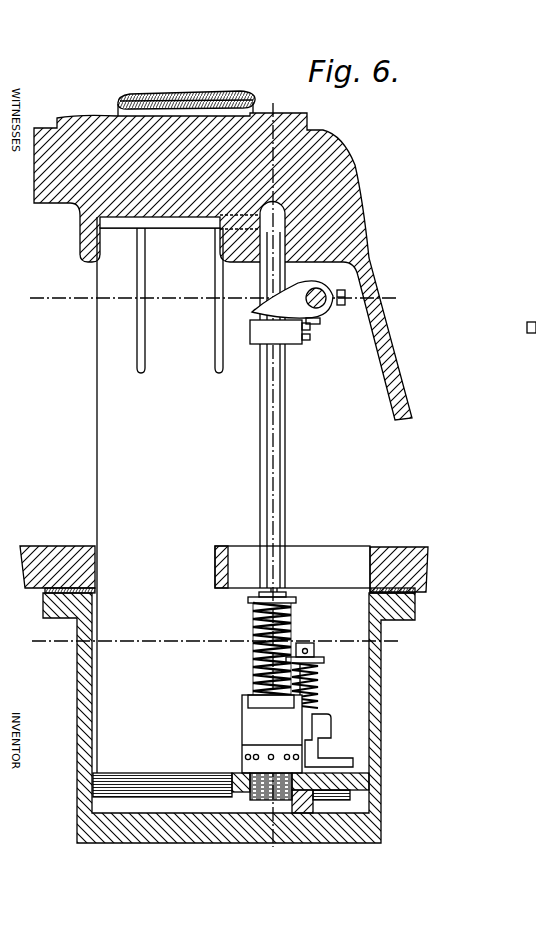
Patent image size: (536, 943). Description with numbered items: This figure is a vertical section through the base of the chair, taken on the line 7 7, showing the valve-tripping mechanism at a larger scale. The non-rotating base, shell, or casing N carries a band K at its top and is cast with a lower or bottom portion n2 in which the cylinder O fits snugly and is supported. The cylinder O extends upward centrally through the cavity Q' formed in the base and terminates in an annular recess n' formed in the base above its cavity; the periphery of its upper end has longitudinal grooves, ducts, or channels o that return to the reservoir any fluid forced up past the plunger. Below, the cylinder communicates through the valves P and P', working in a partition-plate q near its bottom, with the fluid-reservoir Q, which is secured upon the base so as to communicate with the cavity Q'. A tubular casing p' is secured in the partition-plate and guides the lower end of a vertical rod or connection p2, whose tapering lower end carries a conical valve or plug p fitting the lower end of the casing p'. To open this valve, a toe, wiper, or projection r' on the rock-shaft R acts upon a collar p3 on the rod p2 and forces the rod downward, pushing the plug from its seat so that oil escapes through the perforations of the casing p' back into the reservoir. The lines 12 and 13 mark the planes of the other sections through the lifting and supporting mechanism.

The base, shell, or casing N is at (388, 370).
The band K is at (186, 93).
The annular recess n' is at (158, 220).
The cylinder O is at (145, 495).
The longitudinal grooves, ducts, or channels o is at (220, 322).
The cavity Q' is at (291, 394).
The vertical rod or connection p2 is at (278, 526).
The section line 7 7 is at (273, 475).
The section line 12 12 is at (211, 299).
The rock-shaft R is at (322, 291).
The toe, wiper, or projection r' is at (304, 303).
The collar p3 is at (280, 332).
The lower or bottom portion of the base n2 is at (58, 557).
The fluid-reservoir Q is at (229, 718).
The section line 13 13 is at (216, 644).
The valve P' is at (272, 734).
The tubular casing p' is at (258, 773).
The valve P is at (329, 740).
The conical or tapering valve or plug p is at (259, 797).
The partition-plate q is at (302, 802).